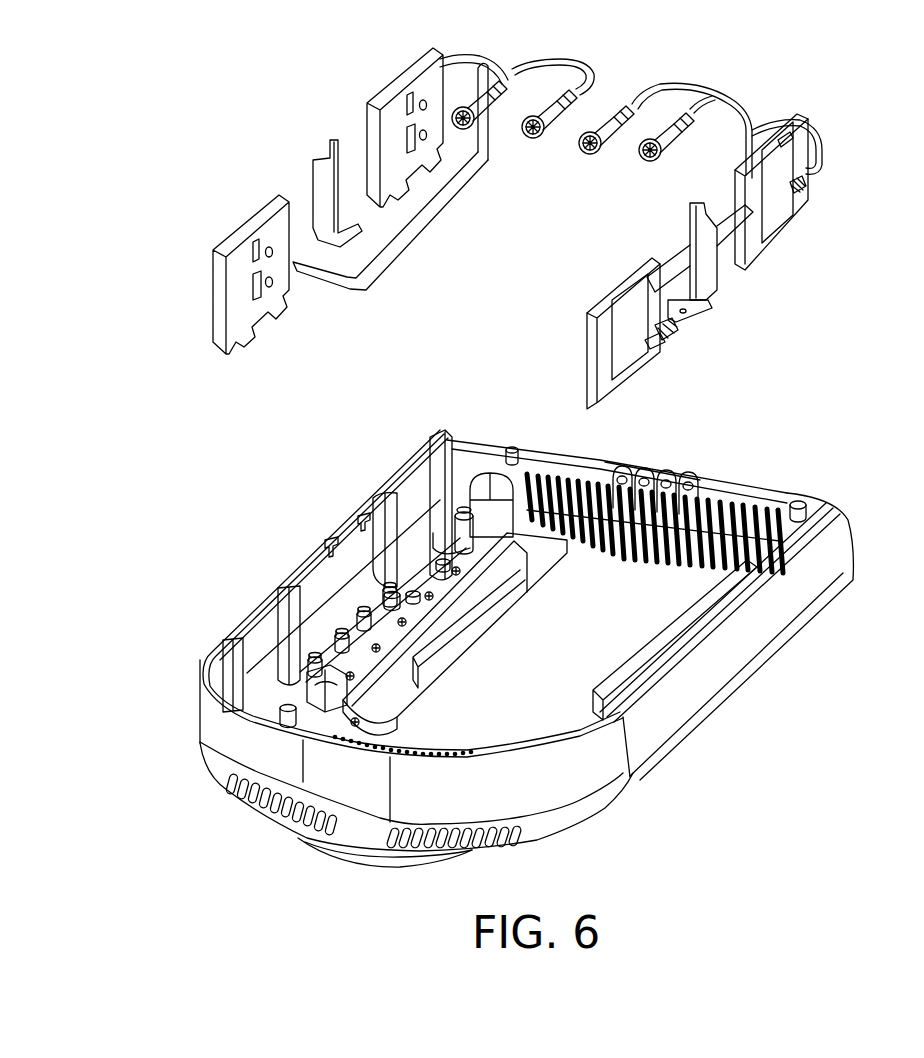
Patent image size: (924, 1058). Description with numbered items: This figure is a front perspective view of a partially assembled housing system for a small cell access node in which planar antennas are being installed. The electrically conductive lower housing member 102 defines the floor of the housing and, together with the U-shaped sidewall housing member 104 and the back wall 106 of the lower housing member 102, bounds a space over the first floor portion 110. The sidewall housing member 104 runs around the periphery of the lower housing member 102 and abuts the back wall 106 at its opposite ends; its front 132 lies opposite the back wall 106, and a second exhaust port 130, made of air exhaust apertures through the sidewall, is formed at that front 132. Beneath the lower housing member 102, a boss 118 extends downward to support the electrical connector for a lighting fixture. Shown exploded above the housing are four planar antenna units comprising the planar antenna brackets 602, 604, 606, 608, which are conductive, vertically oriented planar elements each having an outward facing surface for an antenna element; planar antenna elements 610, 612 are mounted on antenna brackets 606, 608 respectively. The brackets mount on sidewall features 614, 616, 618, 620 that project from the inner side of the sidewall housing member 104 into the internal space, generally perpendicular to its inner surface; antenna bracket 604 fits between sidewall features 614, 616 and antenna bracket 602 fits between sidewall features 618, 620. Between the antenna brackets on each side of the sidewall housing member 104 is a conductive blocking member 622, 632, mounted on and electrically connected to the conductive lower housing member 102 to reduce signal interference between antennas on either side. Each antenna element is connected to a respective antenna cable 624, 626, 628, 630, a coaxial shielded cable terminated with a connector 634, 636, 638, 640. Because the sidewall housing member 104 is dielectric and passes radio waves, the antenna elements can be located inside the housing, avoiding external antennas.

The lower housing member 102 is at (721, 701).
The sidewall housing member 104 is at (254, 604).
The back wall 106 is at (773, 485).
The first floor portion 110 is at (633, 608).
The boss 118 is at (370, 877).
The second exhaust port 130 is at (263, 823).
The front 132 is at (220, 745).
The planar antenna bracket 602 is at (250, 220).
The planar antenna bracket 604 is at (413, 63).
The planar antenna bracket 606 is at (757, 252).
The planar antenna bracket 608 is at (620, 403).
The planar antenna element 610 is at (803, 197).
The planar antenna element 612 is at (647, 350).
The sidewall feature 614 is at (443, 433).
The sidewall feature 616 is at (390, 492).
The sidewall feature 618 is at (293, 580).
The sidewall feature 620 is at (210, 667).
The conductive blocking member 622 is at (330, 153).
The antenna cable 624 is at (412, 250).
The antenna cable 626 is at (537, 73).
The antenna cable 628 is at (670, 83).
The antenna cable 630 is at (677, 280).
The conductive blocking member 632 is at (708, 267).
The connector 634 is at (467, 137).
The connector 636 is at (518, 143).
The connector 638 is at (582, 153).
The connector 640 is at (643, 163).